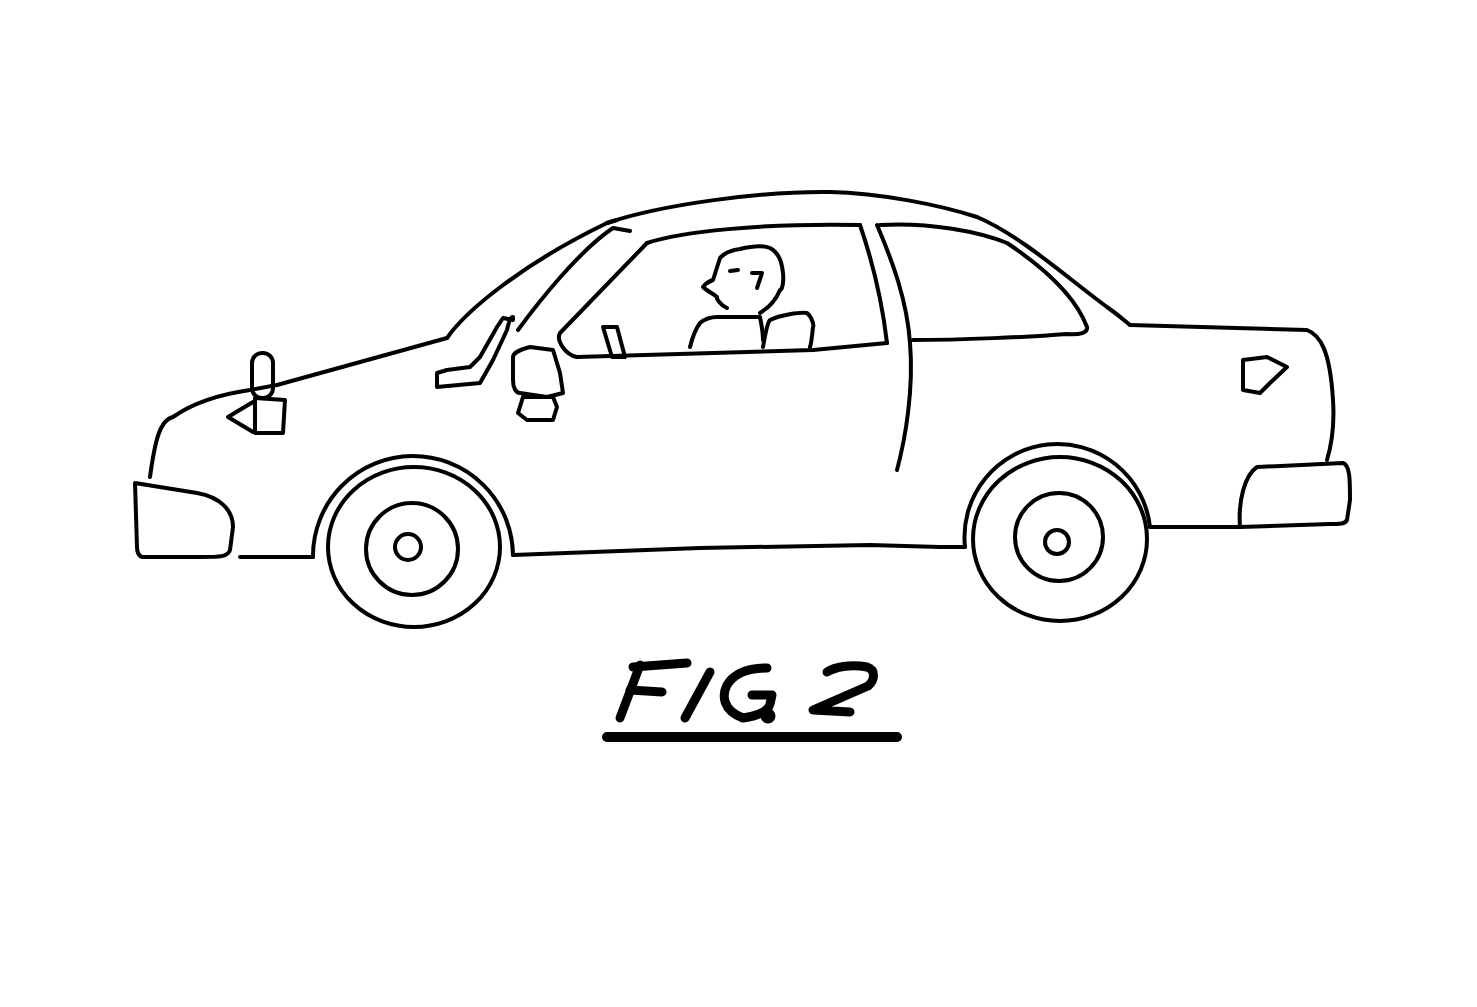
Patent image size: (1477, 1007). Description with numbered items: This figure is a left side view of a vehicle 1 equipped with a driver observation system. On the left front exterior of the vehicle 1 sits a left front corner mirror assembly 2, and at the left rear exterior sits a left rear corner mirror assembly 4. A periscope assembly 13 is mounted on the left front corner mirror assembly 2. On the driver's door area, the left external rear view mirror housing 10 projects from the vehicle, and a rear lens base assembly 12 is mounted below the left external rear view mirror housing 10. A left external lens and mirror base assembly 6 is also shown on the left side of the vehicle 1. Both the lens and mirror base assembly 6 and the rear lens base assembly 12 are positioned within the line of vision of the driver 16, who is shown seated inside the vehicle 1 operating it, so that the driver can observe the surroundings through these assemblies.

The vehicle 1 is at (1150, 317).
The left front corner mirror assembly 2 is at (260, 437).
The left rear corner mirror assembly 4 is at (1283, 380).
The left external lens and mirror base assembly 6 is at (473, 311).
The left external rear view mirror housing 10 is at (557, 370).
The rear lens base assembly 12 is at (540, 427).
The periscope assembly 13 is at (275, 364).
The driver 16 is at (797, 268).